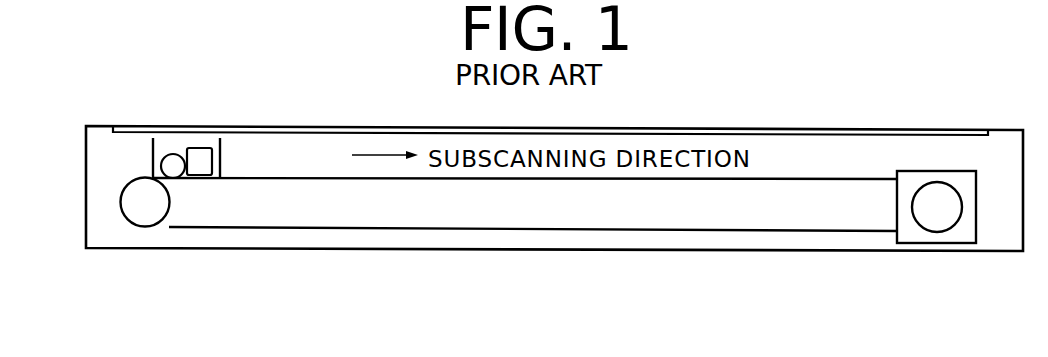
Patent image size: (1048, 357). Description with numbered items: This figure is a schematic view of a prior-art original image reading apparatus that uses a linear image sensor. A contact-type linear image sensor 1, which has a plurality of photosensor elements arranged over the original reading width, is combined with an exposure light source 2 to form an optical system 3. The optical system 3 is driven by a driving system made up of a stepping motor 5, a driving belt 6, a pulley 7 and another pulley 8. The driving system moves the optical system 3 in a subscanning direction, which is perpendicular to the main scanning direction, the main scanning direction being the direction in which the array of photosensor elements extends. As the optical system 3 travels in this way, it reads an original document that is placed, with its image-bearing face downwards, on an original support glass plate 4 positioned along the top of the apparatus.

The contact-type linear image sensor 1 is at (205, 149).
The exposure light source 2 is at (176, 154).
The optical system 3 is at (205, 179).
The original support glass plate 4 is at (824, 130).
The stepping motor 5 is at (937, 243).
The driving belt 6 is at (507, 230).
The pulley 7 is at (142, 222).
The pulley 8 is at (950, 218).